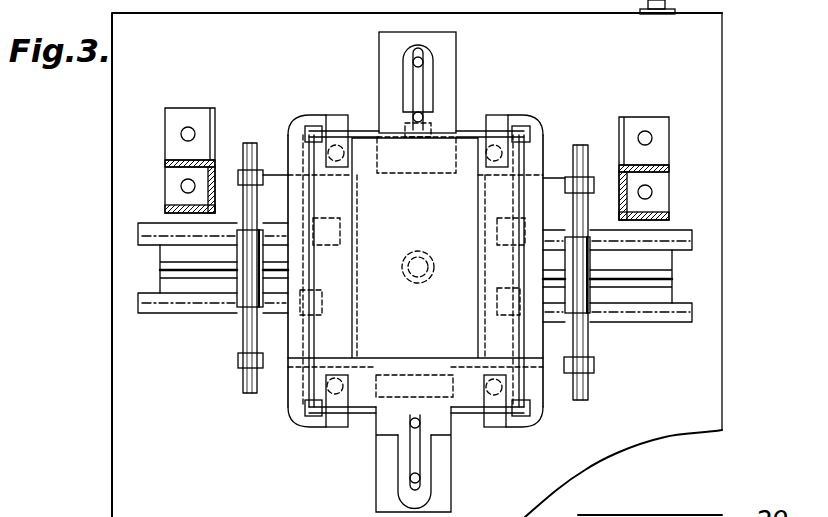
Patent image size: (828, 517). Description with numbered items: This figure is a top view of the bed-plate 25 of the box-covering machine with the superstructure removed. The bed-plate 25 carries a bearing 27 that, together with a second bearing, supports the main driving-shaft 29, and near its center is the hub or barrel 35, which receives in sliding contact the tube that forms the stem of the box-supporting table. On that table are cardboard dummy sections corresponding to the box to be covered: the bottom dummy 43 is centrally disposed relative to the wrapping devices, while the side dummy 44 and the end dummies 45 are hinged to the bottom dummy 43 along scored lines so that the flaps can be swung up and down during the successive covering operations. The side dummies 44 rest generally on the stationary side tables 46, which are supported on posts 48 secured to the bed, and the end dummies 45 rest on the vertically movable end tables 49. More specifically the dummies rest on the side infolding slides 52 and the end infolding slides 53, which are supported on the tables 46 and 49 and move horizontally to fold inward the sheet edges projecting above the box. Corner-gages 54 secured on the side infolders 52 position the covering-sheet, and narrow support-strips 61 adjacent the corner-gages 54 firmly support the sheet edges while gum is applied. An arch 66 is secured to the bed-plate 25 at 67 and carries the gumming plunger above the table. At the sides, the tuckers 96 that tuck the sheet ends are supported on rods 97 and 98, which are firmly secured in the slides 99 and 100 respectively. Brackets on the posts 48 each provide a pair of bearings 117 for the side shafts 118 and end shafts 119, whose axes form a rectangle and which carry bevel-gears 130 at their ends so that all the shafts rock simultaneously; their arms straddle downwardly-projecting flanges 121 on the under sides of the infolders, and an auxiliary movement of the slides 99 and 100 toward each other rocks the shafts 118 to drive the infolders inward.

The bed-plate 25 is at (417, 265).
The bearing 27 is at (658, 18).
The main driving-shaft 29 is at (648, 14).
The hub or barrel 35 is at (431, 257).
The bottom dummy 43 is at (491, 322).
The side dummy 44 is at (338, 342).
The end dummy 45 is at (413, 142).
The side table 46 is at (416, 198).
The post 48 is at (333, 377).
The end table 49 is at (448, 60).
The side infolding slide 52 is at (548, 148).
The end infolding slide 53 is at (448, 120).
The corner-gage 54 is at (310, 128).
The support-strip 61 is at (312, 192).
The arch 66 is at (165, 162).
The securing point of arch 67 is at (177, 188).
The tucker 96 is at (283, 157).
The rod 97 is at (589, 345).
The rod 98 is at (245, 342).
The slide 99 is at (205, 285).
The slide 100 is at (637, 295).
The bearing 117 is at (337, 120).
The side shaft 118 is at (302, 343).
The end shaft 119 is at (362, 125).
The downwardly-projecting flange 121 is at (318, 217).
The bevel-gear 130 is at (509, 123).